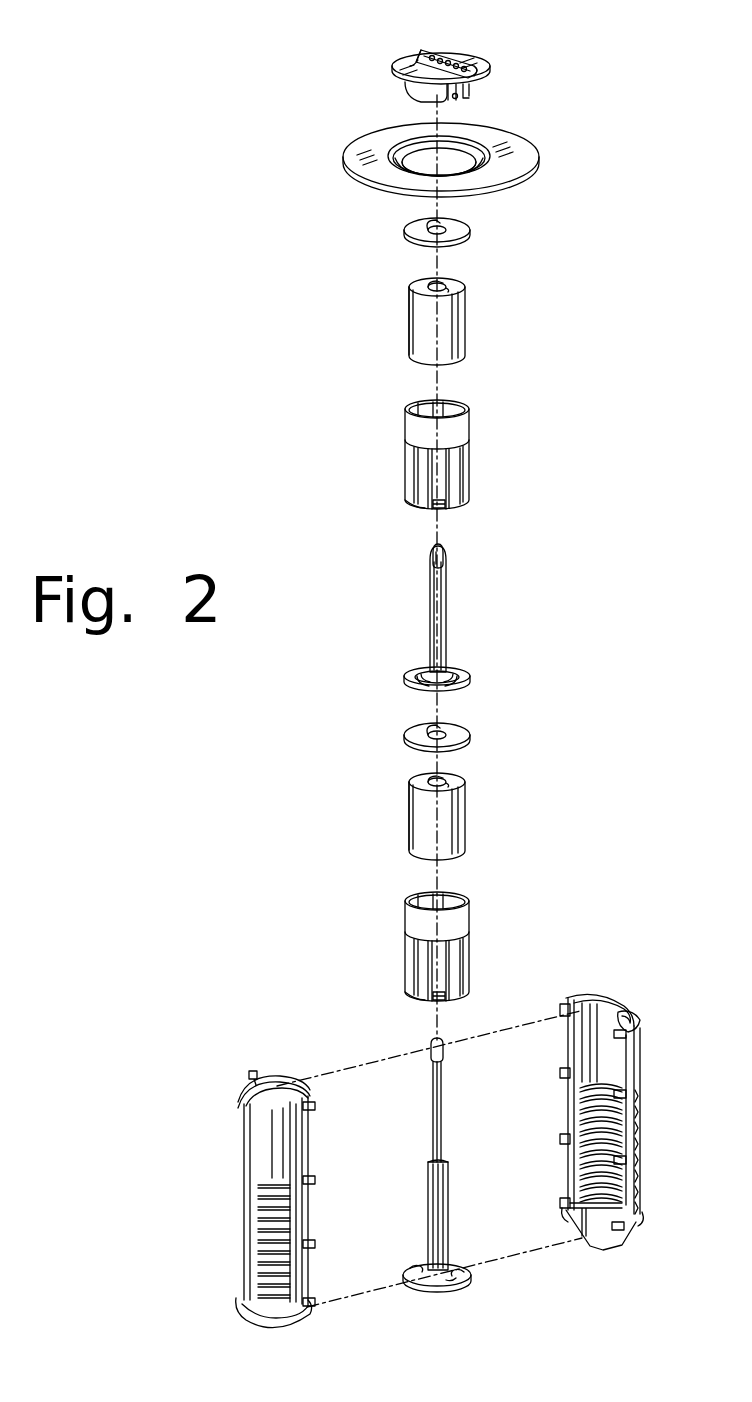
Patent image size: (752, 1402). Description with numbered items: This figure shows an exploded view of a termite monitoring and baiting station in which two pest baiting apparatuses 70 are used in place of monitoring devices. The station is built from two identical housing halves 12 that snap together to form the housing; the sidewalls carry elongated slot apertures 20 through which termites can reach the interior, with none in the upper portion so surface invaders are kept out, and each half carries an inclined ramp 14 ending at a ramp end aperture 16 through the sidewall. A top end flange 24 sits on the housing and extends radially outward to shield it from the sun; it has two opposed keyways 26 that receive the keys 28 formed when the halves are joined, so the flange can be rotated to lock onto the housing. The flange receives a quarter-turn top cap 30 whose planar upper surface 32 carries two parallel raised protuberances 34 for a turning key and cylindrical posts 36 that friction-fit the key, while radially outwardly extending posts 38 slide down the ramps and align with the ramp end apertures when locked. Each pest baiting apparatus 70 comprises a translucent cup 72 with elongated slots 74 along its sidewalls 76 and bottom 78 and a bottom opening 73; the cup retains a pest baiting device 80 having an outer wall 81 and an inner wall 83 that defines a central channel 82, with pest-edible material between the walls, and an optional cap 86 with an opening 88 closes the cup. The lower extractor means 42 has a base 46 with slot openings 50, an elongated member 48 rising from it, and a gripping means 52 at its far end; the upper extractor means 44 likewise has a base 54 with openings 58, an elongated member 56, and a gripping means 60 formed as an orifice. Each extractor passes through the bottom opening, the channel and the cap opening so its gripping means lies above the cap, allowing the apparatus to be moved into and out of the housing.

The housing half 12 is at (445, 1139).
The inclined ramp 14 is at (604, 1000).
The ramp end aperture 16 is at (629, 1008).
The apertures 20 is at (238, 1240).
The top end flange 24 is at (458, 148).
The keyway 26 is at (480, 146).
The key 28 is at (254, 1073).
The top cap 30 is at (402, 74).
The planar upper surface 32 is at (452, 46).
The raised protuberances 34 is at (470, 66).
The posts 36 is at (418, 60).
The radially outwardly extending posts 38 is at (466, 96).
The extractor means 42 is at (457, 1160).
The extractor means 44 is at (425, 622).
The base 46 is at (426, 1287).
The elongated member 48 is at (446, 1208).
The openings 50 is at (456, 1288).
The gripping means 52 is at (442, 1038).
The base 54 is at (441, 673).
The elongated member 56 is at (445, 612).
The openings 58 is at (408, 681).
The gripping means 60 is at (448, 559).
The pest baiting apparatus 70 is at (446, 633).
The cup 72 is at (458, 713).
The bottom opening 73 is at (440, 504).
The elongated slots 74 is at (424, 492).
The sidewalls 76 is at (416, 425).
The bottom 78 is at (416, 525).
The pest baiting device 80 is at (431, 557).
The outer wall 81 is at (408, 326).
The channel 82 is at (424, 284).
The inner wall 83 is at (454, 284).
The cap 86 is at (449, 488).
The opening 88 is at (418, 230).